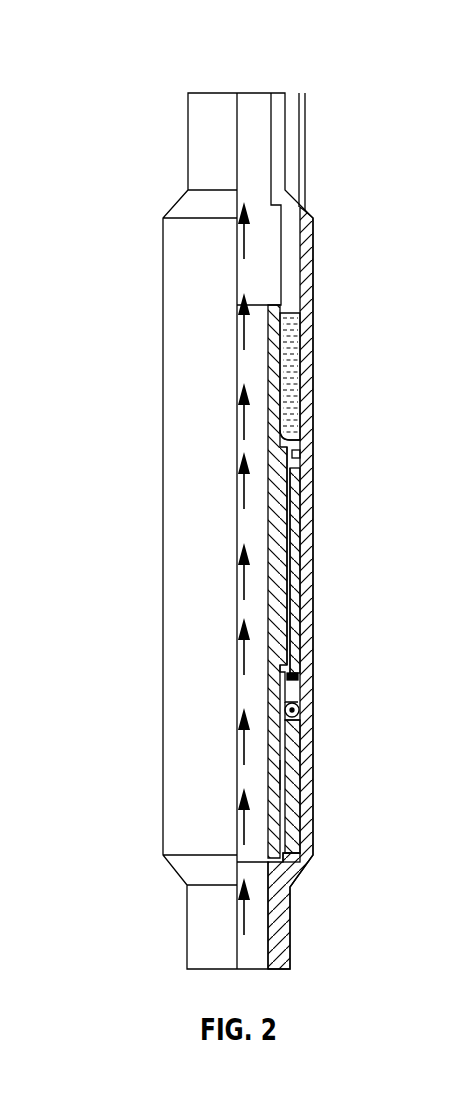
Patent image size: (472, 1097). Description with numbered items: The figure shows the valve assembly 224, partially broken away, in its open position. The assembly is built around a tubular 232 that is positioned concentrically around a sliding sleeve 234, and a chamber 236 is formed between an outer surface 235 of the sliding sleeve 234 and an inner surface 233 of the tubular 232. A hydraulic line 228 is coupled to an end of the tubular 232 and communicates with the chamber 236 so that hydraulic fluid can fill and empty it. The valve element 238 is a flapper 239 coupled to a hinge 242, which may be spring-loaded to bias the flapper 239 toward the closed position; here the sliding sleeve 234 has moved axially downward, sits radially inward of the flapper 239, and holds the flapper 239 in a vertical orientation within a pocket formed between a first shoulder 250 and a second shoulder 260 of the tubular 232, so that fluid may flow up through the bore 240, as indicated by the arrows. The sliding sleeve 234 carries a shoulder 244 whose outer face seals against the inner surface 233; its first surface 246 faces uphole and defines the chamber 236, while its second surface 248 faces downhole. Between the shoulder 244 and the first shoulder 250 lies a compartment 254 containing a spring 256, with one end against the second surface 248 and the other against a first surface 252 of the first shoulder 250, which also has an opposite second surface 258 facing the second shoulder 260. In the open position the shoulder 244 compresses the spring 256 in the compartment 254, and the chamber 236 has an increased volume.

The valve assembly 224 is at (124, 41).
The hydraulic line 228 is at (298, 155).
The tubular 232 is at (162, 282).
The inner surface 233 is at (297, 243).
The sliding sleeve 234 is at (275, 452).
The outer surface 235 is at (283, 310).
The chamber 236 is at (292, 378).
The valve element 238 is at (268, 775).
The flapper 239 is at (293, 818).
The bore 240 is at (243, 612).
The hinge 242 is at (286, 712).
The shoulder 244 is at (298, 451).
The first surface 246 is at (300, 441).
The second surface 248 is at (296, 472).
The first shoulder 250 is at (300, 712).
The first surface 252 is at (298, 676).
The compartment 254 is at (298, 548).
The spring 256 is at (300, 590).
The second surface 258 is at (300, 722).
The second shoulder 260 is at (295, 865).